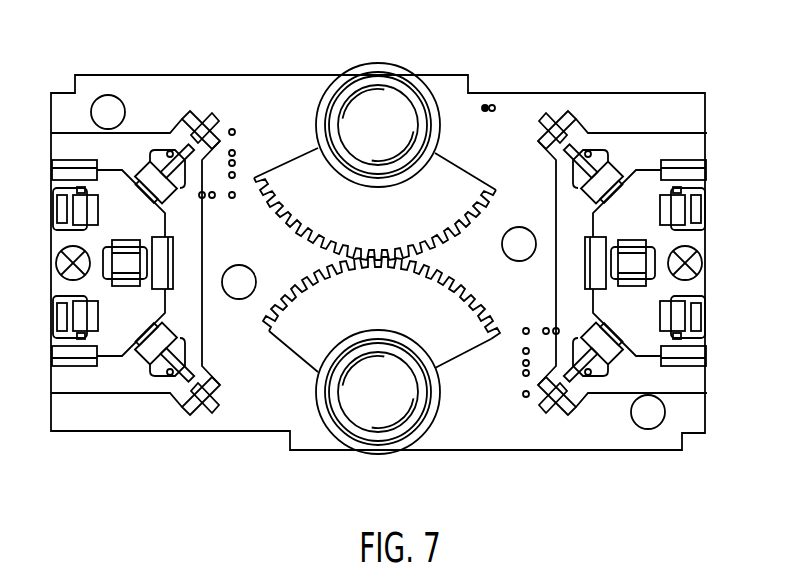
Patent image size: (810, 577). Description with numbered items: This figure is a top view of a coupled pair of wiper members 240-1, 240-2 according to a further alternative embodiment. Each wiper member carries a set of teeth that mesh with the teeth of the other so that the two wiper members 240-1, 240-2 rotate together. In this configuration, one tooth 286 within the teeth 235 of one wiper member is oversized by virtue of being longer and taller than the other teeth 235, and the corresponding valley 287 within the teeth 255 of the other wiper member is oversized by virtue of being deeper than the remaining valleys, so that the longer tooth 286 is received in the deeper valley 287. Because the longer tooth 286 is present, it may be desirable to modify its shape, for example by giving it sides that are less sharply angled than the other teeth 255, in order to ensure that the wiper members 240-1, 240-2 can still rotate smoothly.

The wiper member 240-1 is at (317, 387).
The wiper member 240-2 is at (421, 141).
The tooth 286 is at (383, 248).
The valley 287 is at (381, 258).
The teeth 235 is at (264, 325).
The teeth 255 is at (268, 190).